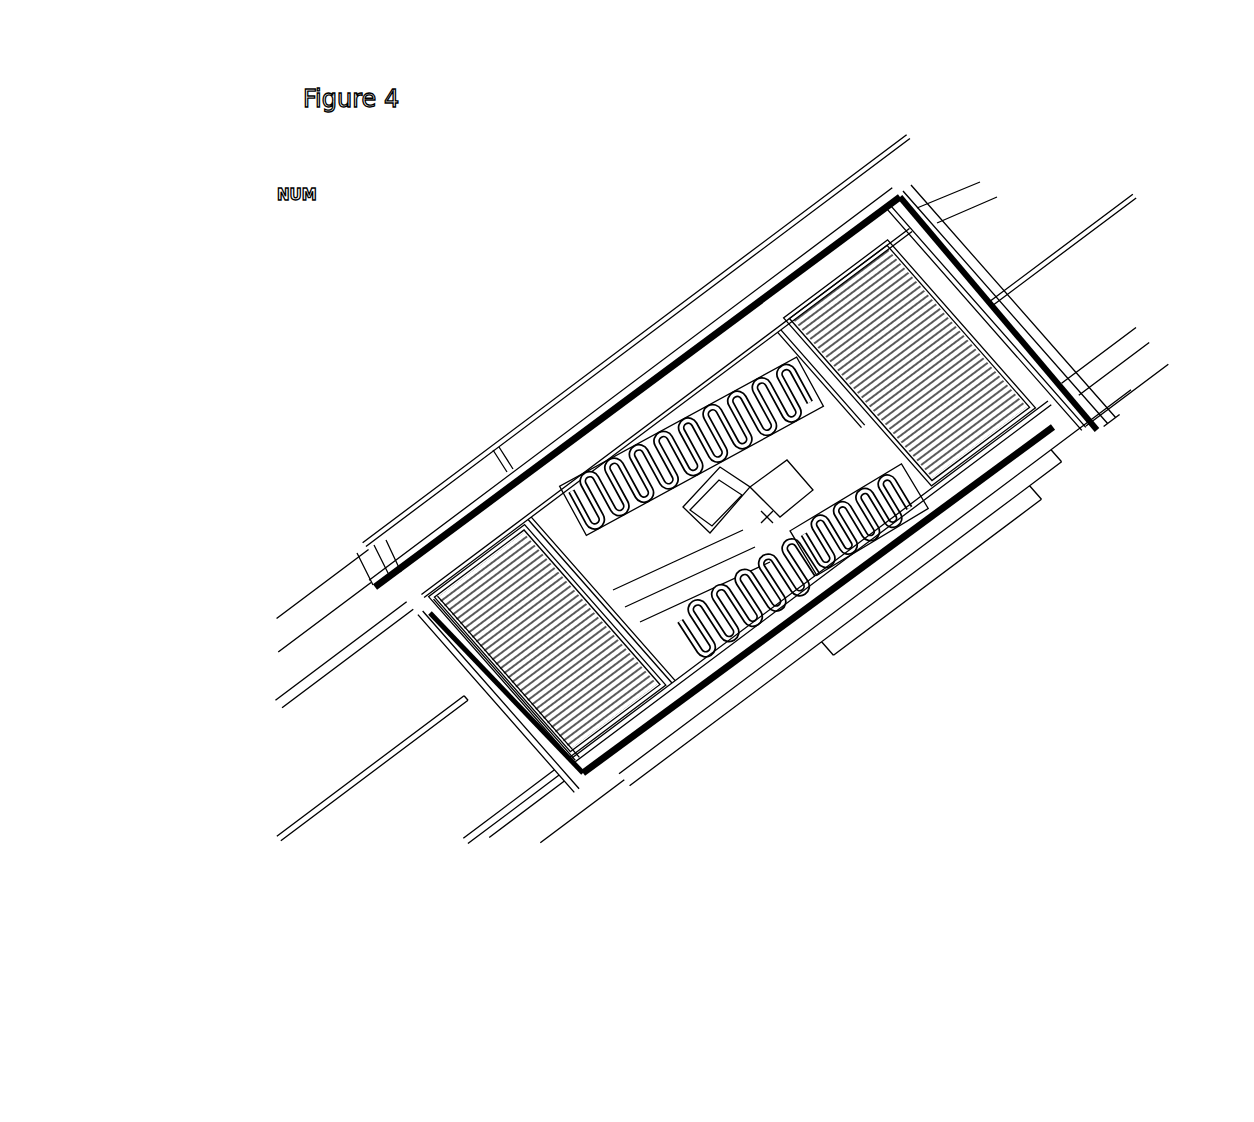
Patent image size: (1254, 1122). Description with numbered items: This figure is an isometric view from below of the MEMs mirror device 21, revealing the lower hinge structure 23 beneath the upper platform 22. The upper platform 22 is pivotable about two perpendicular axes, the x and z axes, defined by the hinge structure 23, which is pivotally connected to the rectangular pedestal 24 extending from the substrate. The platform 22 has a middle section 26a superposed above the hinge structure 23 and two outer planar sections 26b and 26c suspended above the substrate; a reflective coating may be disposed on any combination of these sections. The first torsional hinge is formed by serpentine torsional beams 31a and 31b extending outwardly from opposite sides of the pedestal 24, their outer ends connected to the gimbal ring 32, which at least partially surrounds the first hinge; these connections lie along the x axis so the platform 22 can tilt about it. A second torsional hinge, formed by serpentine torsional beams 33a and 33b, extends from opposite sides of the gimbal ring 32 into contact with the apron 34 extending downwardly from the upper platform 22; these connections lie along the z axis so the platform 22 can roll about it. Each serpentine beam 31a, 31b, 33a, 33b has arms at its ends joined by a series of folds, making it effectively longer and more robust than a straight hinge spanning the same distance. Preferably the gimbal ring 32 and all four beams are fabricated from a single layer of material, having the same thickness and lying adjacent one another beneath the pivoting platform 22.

The MEMs mirror device 21 is at (425, 352).
The upper platform 22 is at (910, 178).
The lower hinge structure 23 is at (747, 632).
The rectangular pedestal 24 is at (775, 533).
The middle section 26a is at (760, 262).
The outer planar section 26b is at (288, 740).
The outer planar section 26c is at (1115, 284).
The torsional beam 31a is at (808, 588).
The torsional beam 31b is at (660, 478).
The gimbal ring 32 is at (510, 474).
The torsional beam 33a is at (623, 703).
The torsional beam 33b is at (976, 430).
The apron 34 is at (1058, 456).